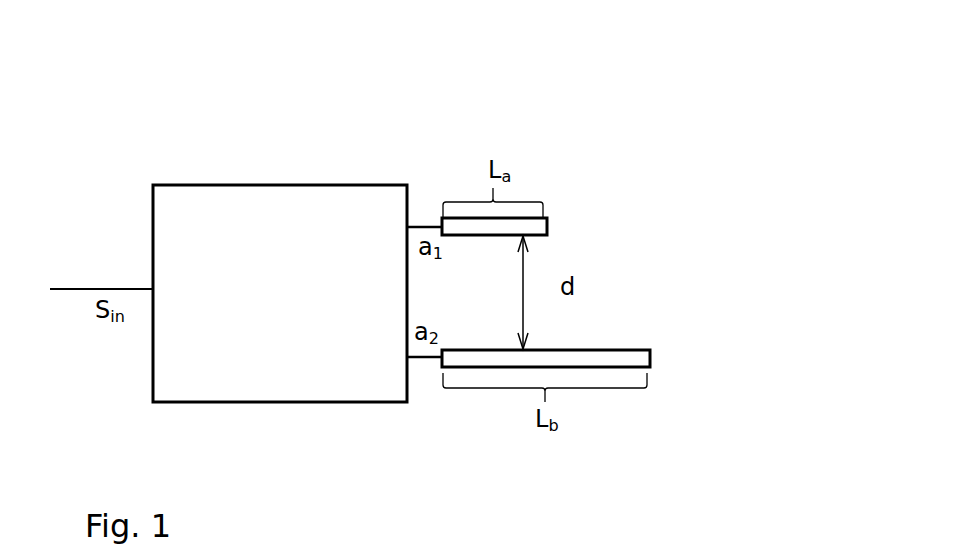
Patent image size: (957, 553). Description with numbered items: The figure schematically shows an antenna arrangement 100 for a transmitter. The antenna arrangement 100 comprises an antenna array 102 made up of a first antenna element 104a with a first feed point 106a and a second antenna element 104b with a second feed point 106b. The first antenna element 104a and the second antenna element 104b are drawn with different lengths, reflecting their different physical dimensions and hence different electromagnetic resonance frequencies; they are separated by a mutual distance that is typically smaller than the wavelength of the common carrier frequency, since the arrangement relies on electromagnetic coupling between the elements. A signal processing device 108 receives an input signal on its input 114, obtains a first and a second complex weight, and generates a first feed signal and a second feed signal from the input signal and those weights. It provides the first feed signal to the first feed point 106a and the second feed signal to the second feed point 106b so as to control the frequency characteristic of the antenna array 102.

The antenna arrangement 100 is at (143, 105).
The antenna array 102 is at (655, 145).
The first antenna element 104a is at (545, 232).
The second antenna element 104b is at (646, 362).
The first feed point 106a is at (410, 224).
The second feed point 106b is at (407, 362).
The signal processing device 108 is at (300, 313).
The input 114 is at (153, 289).